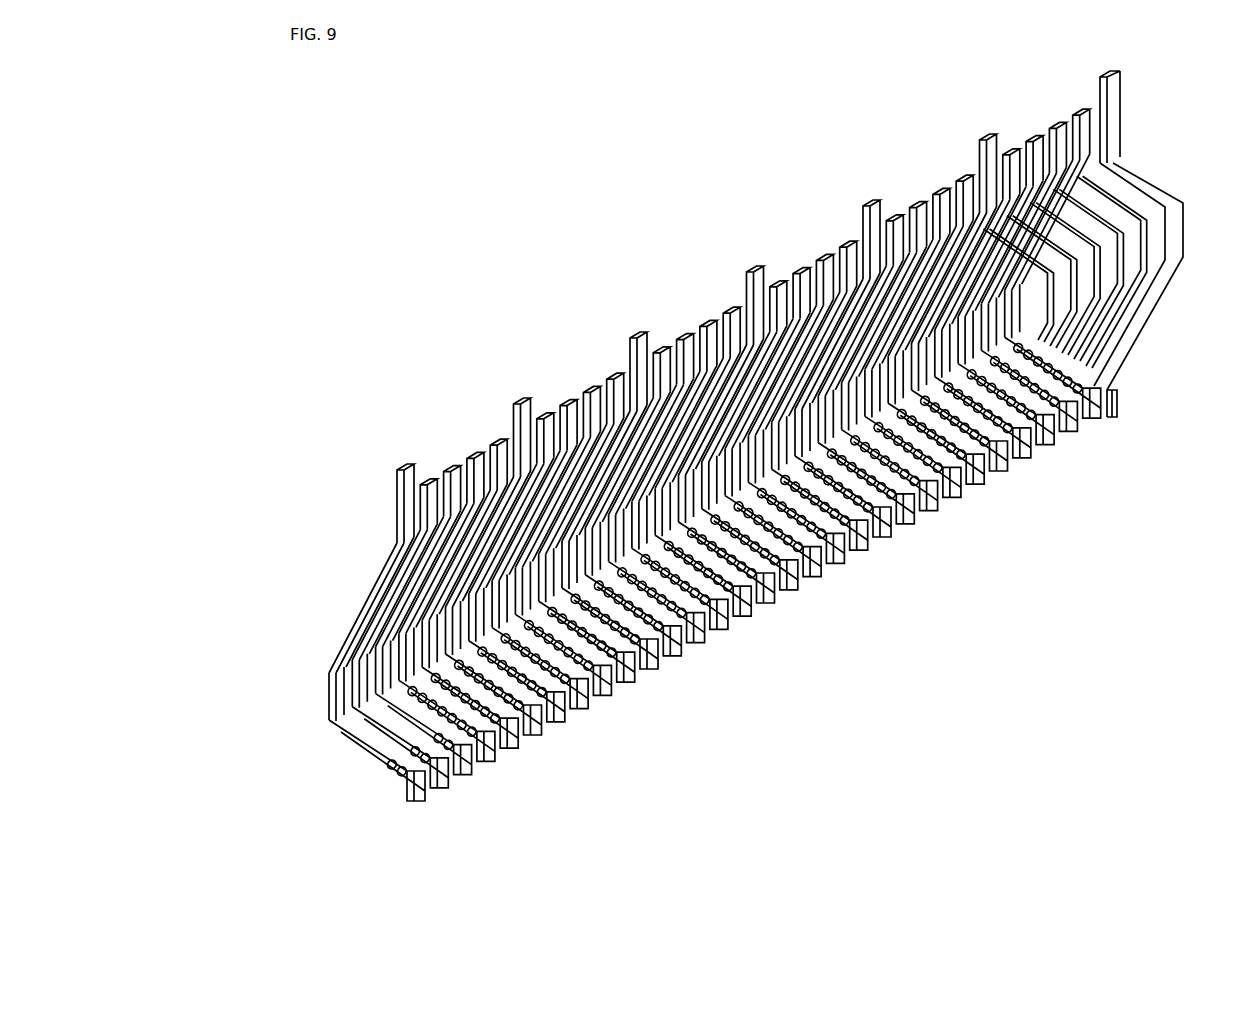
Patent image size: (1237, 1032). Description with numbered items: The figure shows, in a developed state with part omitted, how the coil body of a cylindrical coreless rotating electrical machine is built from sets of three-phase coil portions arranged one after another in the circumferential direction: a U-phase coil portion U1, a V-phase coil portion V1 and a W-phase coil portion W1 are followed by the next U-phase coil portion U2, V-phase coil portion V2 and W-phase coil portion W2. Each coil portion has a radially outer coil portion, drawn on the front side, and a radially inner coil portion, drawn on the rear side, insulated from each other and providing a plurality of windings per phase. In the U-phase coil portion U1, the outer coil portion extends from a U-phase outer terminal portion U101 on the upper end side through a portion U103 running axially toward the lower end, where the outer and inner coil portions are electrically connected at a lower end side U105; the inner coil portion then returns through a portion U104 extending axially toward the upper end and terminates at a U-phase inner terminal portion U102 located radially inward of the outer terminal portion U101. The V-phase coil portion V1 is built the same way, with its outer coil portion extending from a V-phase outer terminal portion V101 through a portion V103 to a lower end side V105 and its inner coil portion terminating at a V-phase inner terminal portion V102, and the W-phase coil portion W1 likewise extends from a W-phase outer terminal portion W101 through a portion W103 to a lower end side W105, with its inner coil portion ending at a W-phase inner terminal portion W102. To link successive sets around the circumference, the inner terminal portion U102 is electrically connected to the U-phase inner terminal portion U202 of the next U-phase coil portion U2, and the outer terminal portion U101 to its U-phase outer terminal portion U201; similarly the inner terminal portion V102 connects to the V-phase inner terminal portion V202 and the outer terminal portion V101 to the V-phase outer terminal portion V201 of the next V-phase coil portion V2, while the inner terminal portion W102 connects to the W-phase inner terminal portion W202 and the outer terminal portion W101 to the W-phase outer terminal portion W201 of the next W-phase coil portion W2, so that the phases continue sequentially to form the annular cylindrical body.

The U-phase coil portion U1 is at (378, 690).
The V-phase coil portion V1 is at (450, 585).
The W-phase coil portion W1 is at (532, 558).
The next U-phase coil portion U2 is at (683, 391).
The next V-phase coil portion V2 is at (797, 325).
The next W-phase coil portion W2 is at (952, 262).
The U-phase outer terminal portion U101 is at (355, 690).
The U-phase inner terminal portion U102 is at (390, 470).
The portion extending toward the lower end U103 is at (343, 698).
The portion extending toward the upper end U104 is at (332, 678).
The lower end side U105 is at (430, 820).
The V-phase outer terminal portion V101 is at (425, 585).
The V-phase inner terminal portion V102 is at (522, 400).
The portion extending toward the lower end V103 is at (455, 640).
The lower end side V105 is at (547, 761).
The W-phase outer terminal portion W101 is at (503, 558).
The W-phase inner terminal portion W102 is at (640, 342).
The portion extending toward the lower end W103 is at (565, 578).
The lower end side W105 is at (660, 703).
The U-phase outer terminal portion of the next U-phase coil portion U201 is at (630, 374).
The U-phase inner terminal portion of the next U-phase coil portion U202 is at (748, 278).
The V-phase outer terminal portion of the next V-phase coil portion V201 is at (743, 306).
The V-phase inner terminal portion of the next V-phase coil portion V202 is at (866, 212).
The W-phase outer terminal portion of the next W-phase coil portion W201 is at (888, 240).
The W-phase inner terminal portion of the next W-phase coil portion W202 is at (988, 142).